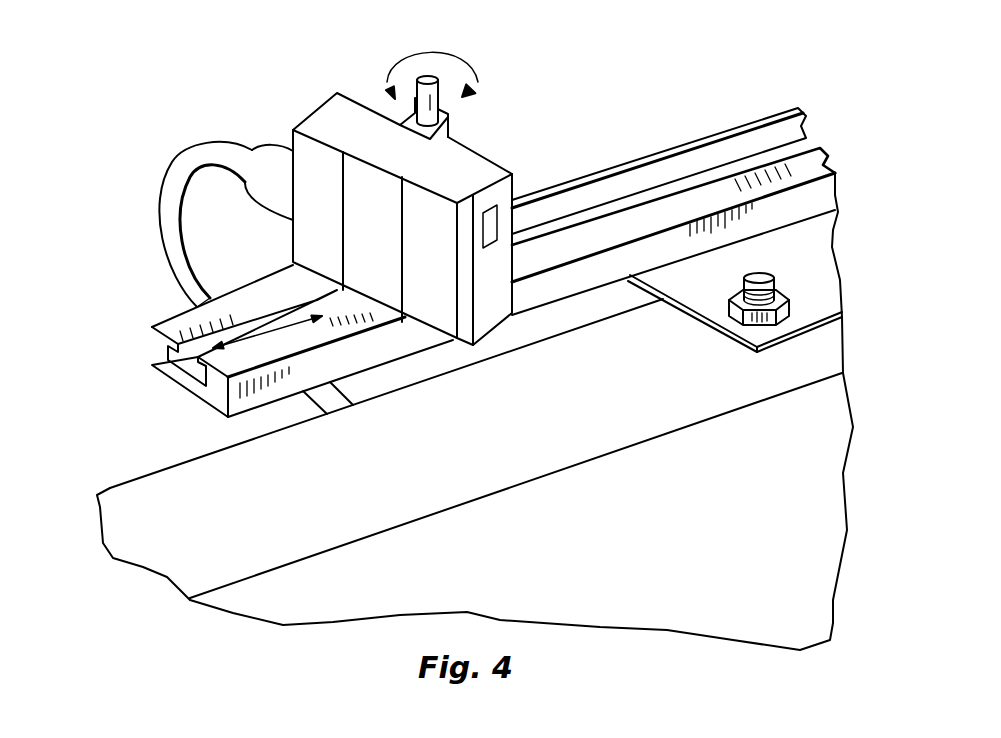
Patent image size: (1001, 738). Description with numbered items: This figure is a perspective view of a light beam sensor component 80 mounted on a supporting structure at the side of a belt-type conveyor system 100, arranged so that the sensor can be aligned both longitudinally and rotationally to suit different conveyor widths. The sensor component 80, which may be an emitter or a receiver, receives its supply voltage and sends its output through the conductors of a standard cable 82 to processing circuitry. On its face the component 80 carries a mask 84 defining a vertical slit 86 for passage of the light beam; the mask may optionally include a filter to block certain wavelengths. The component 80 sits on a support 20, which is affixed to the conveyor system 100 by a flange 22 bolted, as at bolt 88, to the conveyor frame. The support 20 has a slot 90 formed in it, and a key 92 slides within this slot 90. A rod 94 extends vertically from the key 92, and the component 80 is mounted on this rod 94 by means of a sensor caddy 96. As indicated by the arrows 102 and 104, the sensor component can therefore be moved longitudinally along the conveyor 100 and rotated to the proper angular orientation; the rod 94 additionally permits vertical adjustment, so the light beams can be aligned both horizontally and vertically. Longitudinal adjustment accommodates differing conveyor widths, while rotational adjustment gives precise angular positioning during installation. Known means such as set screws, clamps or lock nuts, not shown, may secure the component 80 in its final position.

The support 20 is at (165, 348).
The flange 22 is at (820, 247).
The sensor component 80 is at (492, 154).
The cable 82 is at (183, 168).
The mask 84 is at (500, 195).
The vertical slit 86 is at (493, 228).
The bolt 88 is at (789, 303).
The slot 90 is at (180, 364).
The key 92 is at (290, 286).
The rod 94 is at (431, 100).
The sensor caddy 96 is at (386, 138).
The conveyor system 100 is at (168, 507).
The arrow 102 is at (208, 295).
The arrow 104 is at (480, 60).